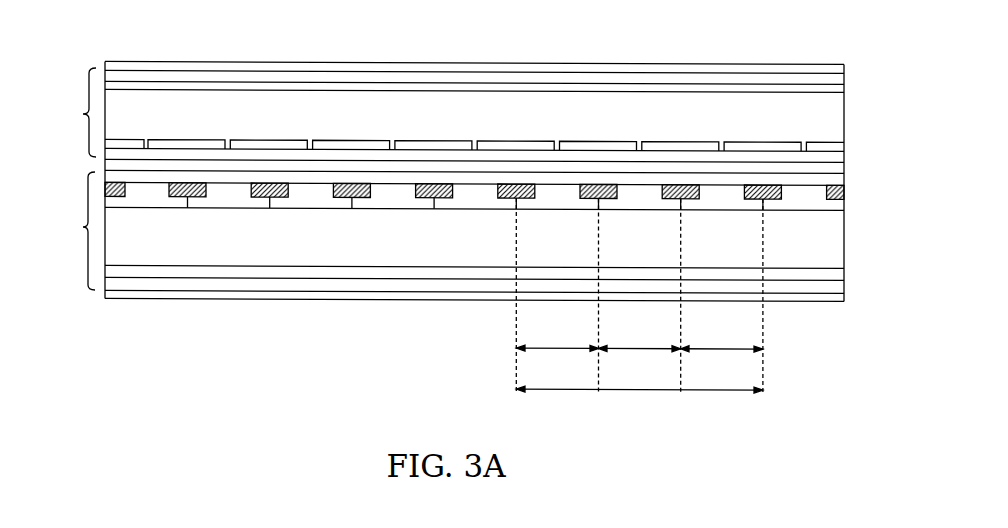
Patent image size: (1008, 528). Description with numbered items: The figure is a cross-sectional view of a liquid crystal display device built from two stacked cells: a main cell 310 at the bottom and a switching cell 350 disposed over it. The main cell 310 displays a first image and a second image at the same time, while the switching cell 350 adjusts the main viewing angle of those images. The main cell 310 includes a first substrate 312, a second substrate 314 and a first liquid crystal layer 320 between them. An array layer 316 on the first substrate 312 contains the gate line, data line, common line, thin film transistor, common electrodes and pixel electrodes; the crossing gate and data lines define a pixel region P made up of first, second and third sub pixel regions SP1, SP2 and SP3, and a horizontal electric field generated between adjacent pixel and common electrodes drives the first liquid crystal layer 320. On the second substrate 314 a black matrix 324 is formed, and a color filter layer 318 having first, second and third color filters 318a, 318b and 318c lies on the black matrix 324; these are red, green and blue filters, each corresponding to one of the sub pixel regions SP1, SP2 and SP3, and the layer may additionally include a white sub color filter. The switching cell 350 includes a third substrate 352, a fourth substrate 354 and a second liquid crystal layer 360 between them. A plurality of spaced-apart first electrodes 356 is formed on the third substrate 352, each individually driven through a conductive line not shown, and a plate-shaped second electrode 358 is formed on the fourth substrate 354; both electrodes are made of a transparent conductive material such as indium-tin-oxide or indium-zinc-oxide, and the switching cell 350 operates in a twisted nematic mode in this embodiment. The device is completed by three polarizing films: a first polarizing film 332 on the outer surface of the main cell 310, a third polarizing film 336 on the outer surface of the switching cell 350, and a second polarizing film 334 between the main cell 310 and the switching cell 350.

The third polarizing film 336 is at (115, 62).
The fourth substrate 354 is at (841, 79).
The second electrode 358 is at (842, 90).
The second liquid crystal layer 360 is at (840, 112).
The first electrodes 356 is at (843, 145).
The third substrate 352 is at (843, 157).
The switching cell 350 is at (76, 112).
The second polarizing film 334 is at (107, 163).
The second substrate 314 is at (842, 180).
The black matrix 324 is at (180, 197).
The color filter layer 318 is at (842, 203).
The first color filter 318a is at (286, 203).
The second color filter 318b is at (374, 203).
The third color filter 318c is at (457, 203).
The first liquid crystal layer 320 is at (840, 237).
The array layer 316 is at (842, 275).
The first substrate 312 is at (842, 289).
The first polarizing film 332 is at (122, 299).
The main cell 310 is at (77, 179).
The first sub pixel region SP1 is at (557, 339).
The second sub pixel region SP2 is at (640, 339).
The third sub pixel region SP3 is at (722, 339).
The pixel region P is at (639, 380).